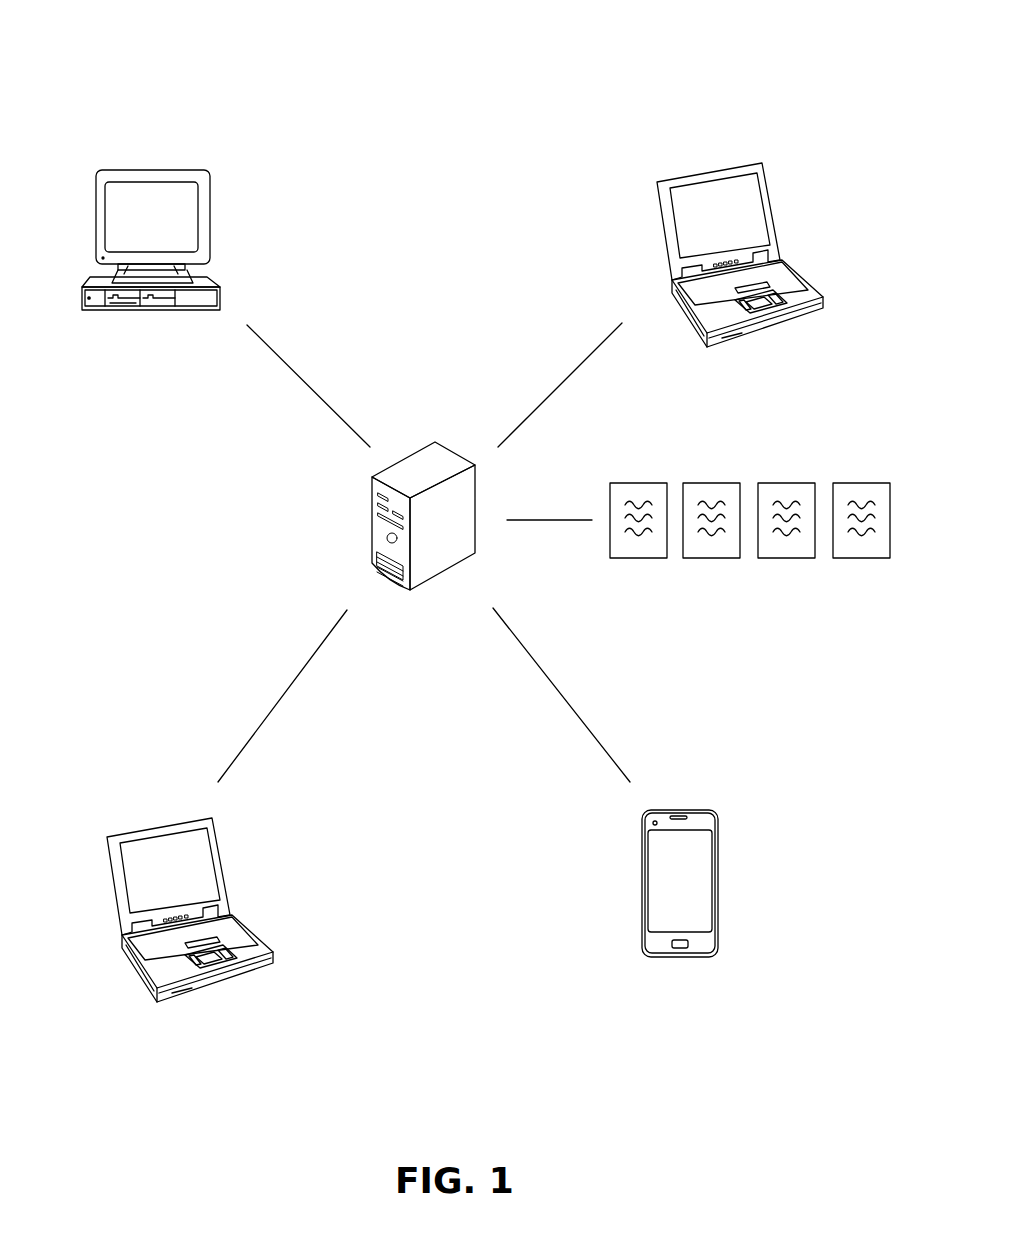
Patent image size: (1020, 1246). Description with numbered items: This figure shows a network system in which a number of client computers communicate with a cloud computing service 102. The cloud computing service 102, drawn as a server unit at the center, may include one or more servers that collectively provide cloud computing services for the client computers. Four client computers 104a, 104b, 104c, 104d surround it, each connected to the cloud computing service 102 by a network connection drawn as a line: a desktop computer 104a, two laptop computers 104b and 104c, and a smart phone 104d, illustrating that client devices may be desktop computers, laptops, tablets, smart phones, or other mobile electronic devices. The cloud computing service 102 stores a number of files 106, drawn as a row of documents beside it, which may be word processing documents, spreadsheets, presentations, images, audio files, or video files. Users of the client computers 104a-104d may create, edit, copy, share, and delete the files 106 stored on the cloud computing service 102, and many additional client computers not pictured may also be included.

The cloud computing service 102 is at (435, 442).
The client computer 104a is at (125, 165).
The client computer 104b is at (672, 175).
The client computer 104c is at (122, 833).
The client computer 104d is at (690, 810).
The files 106 is at (748, 465).